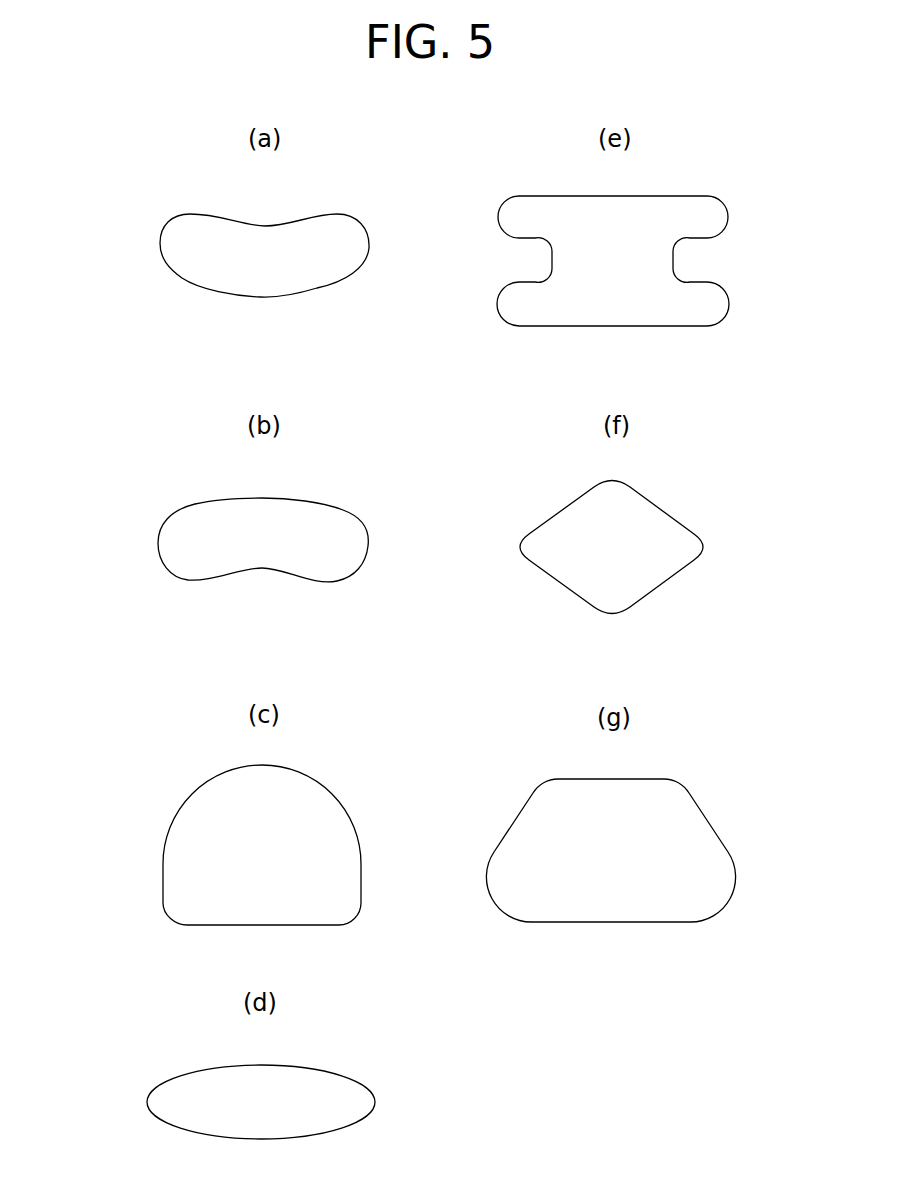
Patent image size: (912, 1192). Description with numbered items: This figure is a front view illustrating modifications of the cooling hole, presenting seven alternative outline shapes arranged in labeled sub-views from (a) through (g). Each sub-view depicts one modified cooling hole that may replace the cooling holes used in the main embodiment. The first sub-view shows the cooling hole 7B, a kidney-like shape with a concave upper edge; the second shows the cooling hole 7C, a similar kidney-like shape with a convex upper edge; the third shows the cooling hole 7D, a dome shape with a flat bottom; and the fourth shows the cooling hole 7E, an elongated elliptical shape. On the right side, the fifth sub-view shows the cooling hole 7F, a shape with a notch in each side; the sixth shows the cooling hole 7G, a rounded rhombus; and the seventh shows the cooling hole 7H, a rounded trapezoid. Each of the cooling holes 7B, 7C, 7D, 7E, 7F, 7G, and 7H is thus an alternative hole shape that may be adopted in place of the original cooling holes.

The cooling hole 7B is at (183, 253).
The cooling hole 7C is at (182, 553).
The cooling hole 7D is at (180, 882).
The cooling hole 7E is at (180, 1108).
The cooling hole 7F is at (698, 223).
The cooling hole 7G is at (663, 533).
The cooling hole 7H is at (697, 858).